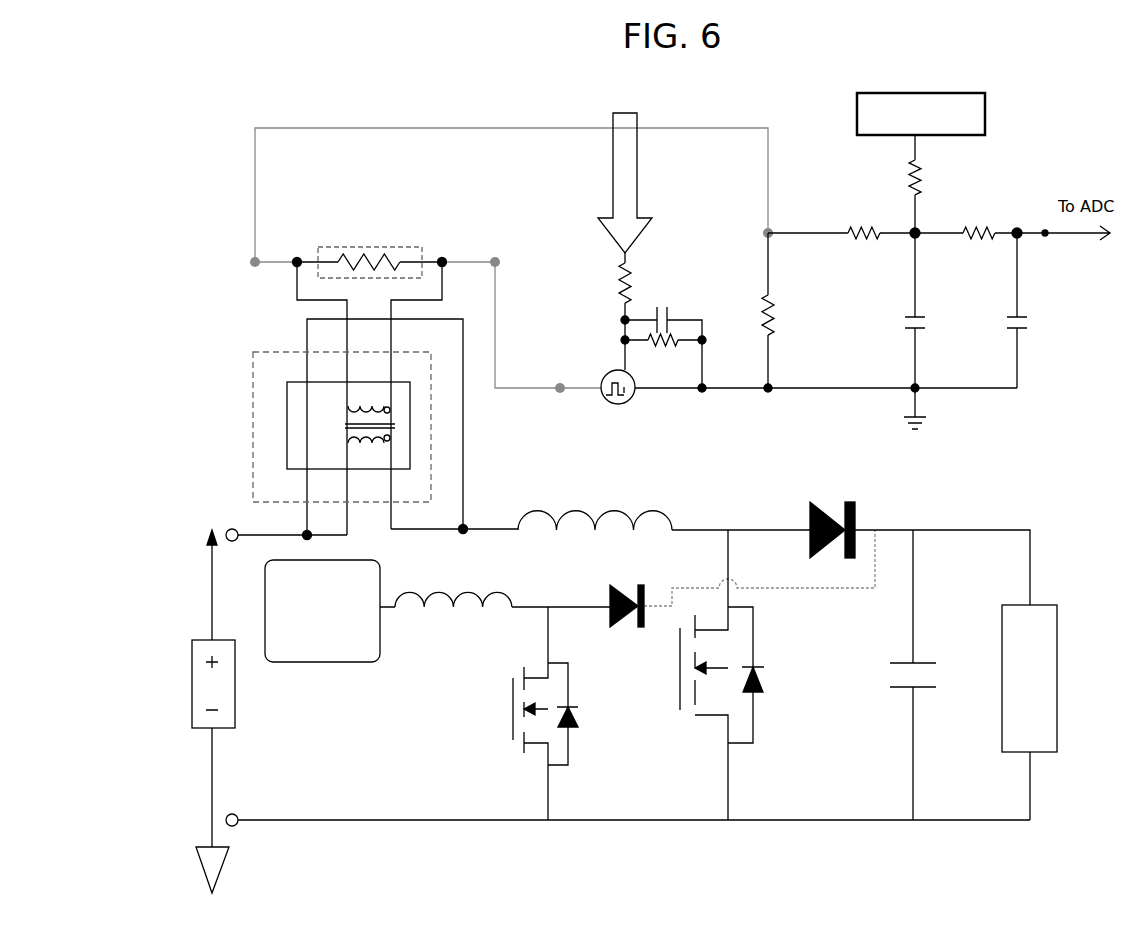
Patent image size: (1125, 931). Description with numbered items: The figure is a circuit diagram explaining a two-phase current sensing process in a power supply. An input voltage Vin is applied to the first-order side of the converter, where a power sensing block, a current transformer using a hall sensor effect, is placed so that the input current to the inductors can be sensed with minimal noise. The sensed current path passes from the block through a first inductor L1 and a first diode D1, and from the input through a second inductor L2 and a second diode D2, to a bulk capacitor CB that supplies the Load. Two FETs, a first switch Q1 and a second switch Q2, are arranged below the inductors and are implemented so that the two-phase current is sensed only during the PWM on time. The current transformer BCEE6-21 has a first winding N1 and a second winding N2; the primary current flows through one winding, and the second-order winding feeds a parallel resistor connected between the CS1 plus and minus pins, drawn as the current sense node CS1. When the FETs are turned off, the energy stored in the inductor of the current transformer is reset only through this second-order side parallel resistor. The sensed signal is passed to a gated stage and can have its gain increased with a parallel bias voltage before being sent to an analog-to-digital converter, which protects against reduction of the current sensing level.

The current sense pins CS1 is at (370, 246).
The current transformer BCEE6-21 is at (342, 427).
The primary winding N1 is at (369, 451).
The secondary winding N2 is at (369, 403).
The input voltage source Vin is at (198, 711).
The first inductor L1 is at (495, 623).
The second inductor L2 is at (664, 499).
The first diode D1 is at (627, 619).
The second diode D2 is at (920, 536).
The FET Q1 is at (556, 713).
The FET Q2 is at (731, 675).
The bulk output capacitor CB is at (928, 675).
The load Load is at (1029, 712).